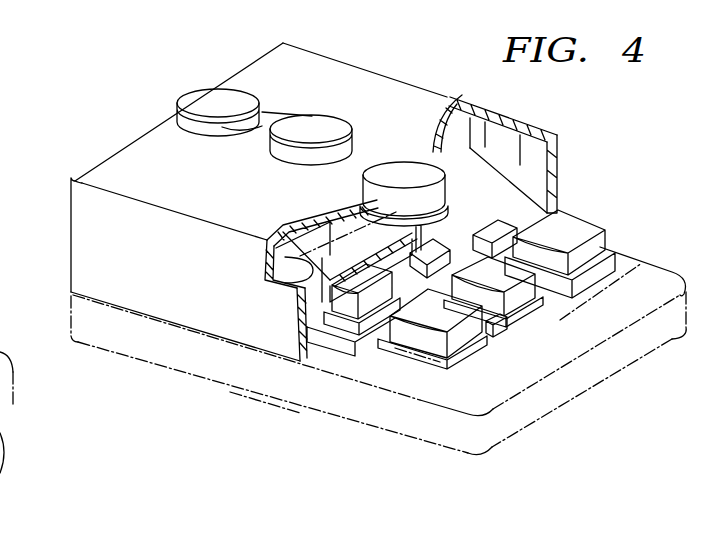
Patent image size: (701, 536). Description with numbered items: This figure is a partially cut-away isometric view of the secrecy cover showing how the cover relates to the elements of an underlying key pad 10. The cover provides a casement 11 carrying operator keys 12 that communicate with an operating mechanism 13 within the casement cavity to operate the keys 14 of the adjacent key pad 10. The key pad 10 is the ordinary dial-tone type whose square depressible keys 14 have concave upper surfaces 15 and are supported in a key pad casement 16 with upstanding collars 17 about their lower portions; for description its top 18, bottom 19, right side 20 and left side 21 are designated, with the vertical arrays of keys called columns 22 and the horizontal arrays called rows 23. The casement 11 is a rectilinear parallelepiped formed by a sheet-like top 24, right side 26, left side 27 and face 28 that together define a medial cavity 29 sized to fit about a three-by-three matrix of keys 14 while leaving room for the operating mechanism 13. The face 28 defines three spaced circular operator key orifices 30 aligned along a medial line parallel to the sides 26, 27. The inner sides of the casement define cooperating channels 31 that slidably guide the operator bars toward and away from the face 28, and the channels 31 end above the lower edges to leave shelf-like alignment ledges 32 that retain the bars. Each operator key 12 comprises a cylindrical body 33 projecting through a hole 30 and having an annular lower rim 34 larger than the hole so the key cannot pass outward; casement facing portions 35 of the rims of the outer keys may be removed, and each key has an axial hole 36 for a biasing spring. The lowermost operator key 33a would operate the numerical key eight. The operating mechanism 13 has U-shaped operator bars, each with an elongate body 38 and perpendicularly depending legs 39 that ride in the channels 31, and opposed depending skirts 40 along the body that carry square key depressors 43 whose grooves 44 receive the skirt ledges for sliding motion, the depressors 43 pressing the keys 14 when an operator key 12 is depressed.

The key pad 10 is at (238, 398).
The casement 11 is at (131, 137).
The operator keys 12 is at (313, 115).
The operating mechanism 13 is at (530, 166).
The keys 14 is at (545, 288).
The upper surfaces 15 is at (495, 255).
The key pad casement 16 is at (407, 383).
The collars 17 is at (554, 282).
The top 18 is at (68, 310).
The bottom 19 is at (637, 338).
The right side 20 is at (655, 268).
The left side 21 is at (227, 363).
The columns 22 is at (380, 348).
The rows 23 is at (525, 272).
The top 24 is at (71, 226).
The right side 26 is at (386, 73).
The left side 27 is at (155, 217).
The face 28 is at (250, 63).
The medial cavity 29 is at (288, 218).
The operator key orifices 30 is at (214, 141).
The channels 31 is at (511, 143).
The alignment ledges 32 is at (306, 356).
The cylindrical bodies 33 is at (212, 97).
The lowermost operator key 33a is at (397, 172).
The lower rims 34 is at (384, 232).
The casement facing portions 35 is at (400, 235).
The holes 36 is at (471, 125).
The elongate body 38 is at (321, 258).
The legs 39 is at (291, 297).
The skirts 40 is at (560, 180).
The key depressors 43 is at (397, 307).
The grooves 44 is at (421, 232).